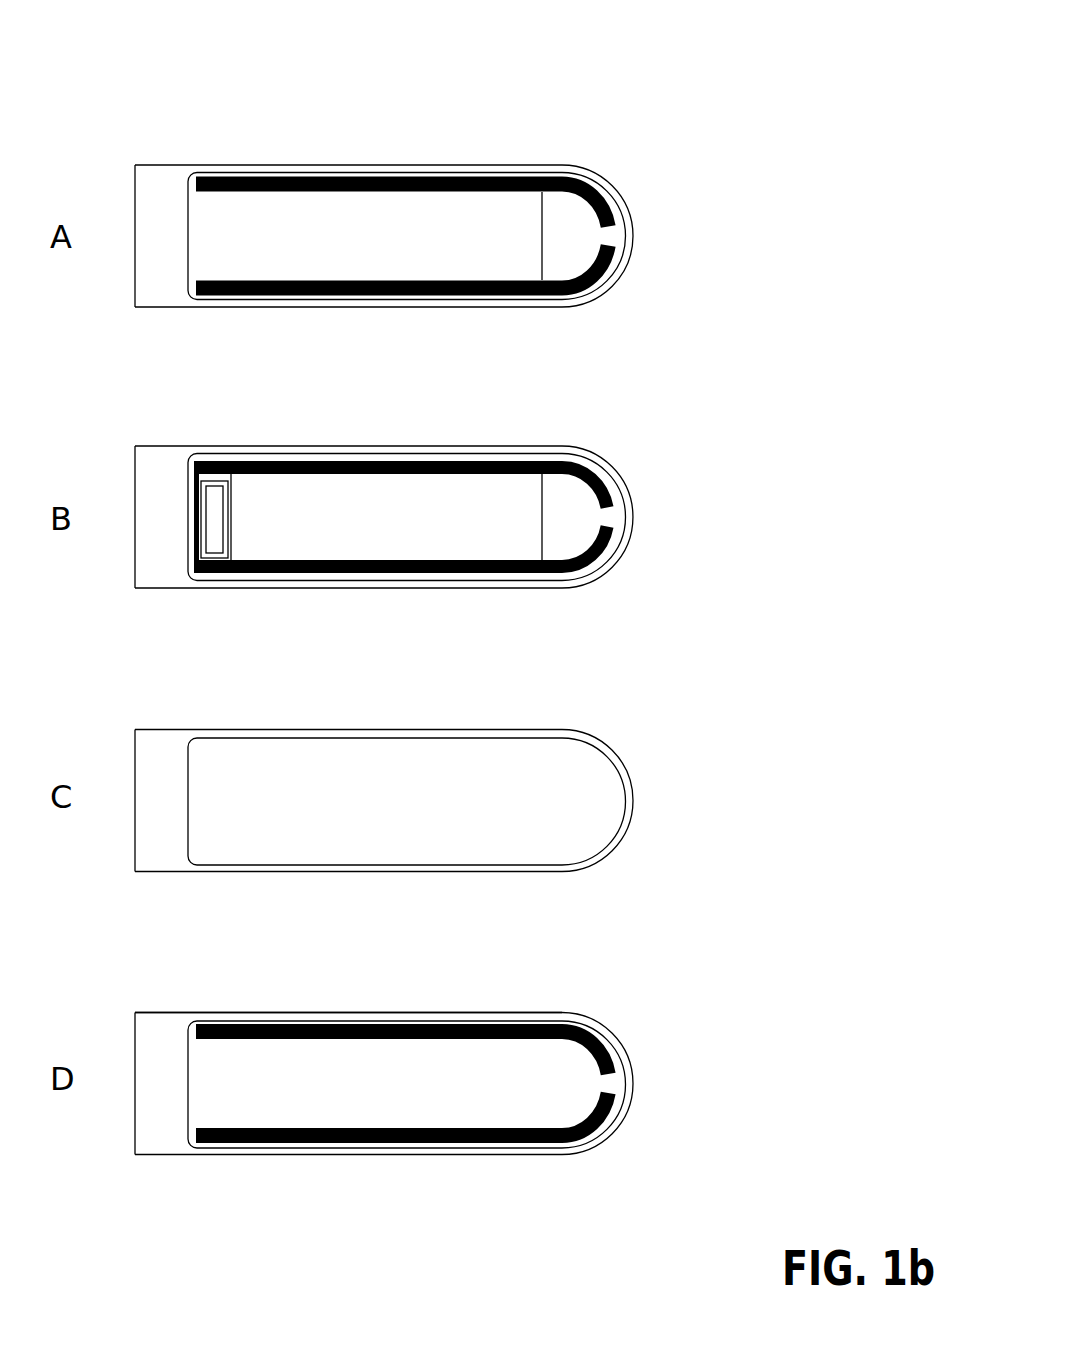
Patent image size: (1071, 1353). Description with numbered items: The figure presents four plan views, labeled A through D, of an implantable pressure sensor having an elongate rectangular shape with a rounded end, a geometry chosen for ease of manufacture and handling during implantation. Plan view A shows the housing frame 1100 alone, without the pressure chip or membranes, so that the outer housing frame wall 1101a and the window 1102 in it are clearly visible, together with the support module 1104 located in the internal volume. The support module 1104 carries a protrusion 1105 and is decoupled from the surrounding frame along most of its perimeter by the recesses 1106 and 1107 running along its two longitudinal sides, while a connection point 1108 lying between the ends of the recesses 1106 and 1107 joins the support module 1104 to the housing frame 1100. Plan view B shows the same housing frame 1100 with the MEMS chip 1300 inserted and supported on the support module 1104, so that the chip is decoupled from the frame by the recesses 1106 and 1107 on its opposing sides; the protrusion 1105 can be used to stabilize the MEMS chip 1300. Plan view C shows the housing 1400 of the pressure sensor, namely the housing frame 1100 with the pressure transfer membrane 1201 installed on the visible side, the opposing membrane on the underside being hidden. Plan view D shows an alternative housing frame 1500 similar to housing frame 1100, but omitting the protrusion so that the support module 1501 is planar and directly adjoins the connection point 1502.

The housing frame 1100 is at (594, 132).
The outer wall 1101a is at (170, 181).
The window 1102 is at (318, 160).
The support module 1104 is at (327, 224).
The protrusion 1105 is at (573, 237).
The recess 1106 is at (437, 172).
The recess 1107 is at (602, 287).
The connection point 1108 is at (613, 233).
The MEMS chip 1300 is at (412, 515).
The housing 1400 is at (302, 718).
The pressure transfer membrane 1201 is at (500, 826).
The housing frame 1500 is at (302, 999).
The support module 1501 is at (418, 1122).
The connection point 1502 is at (607, 1080).